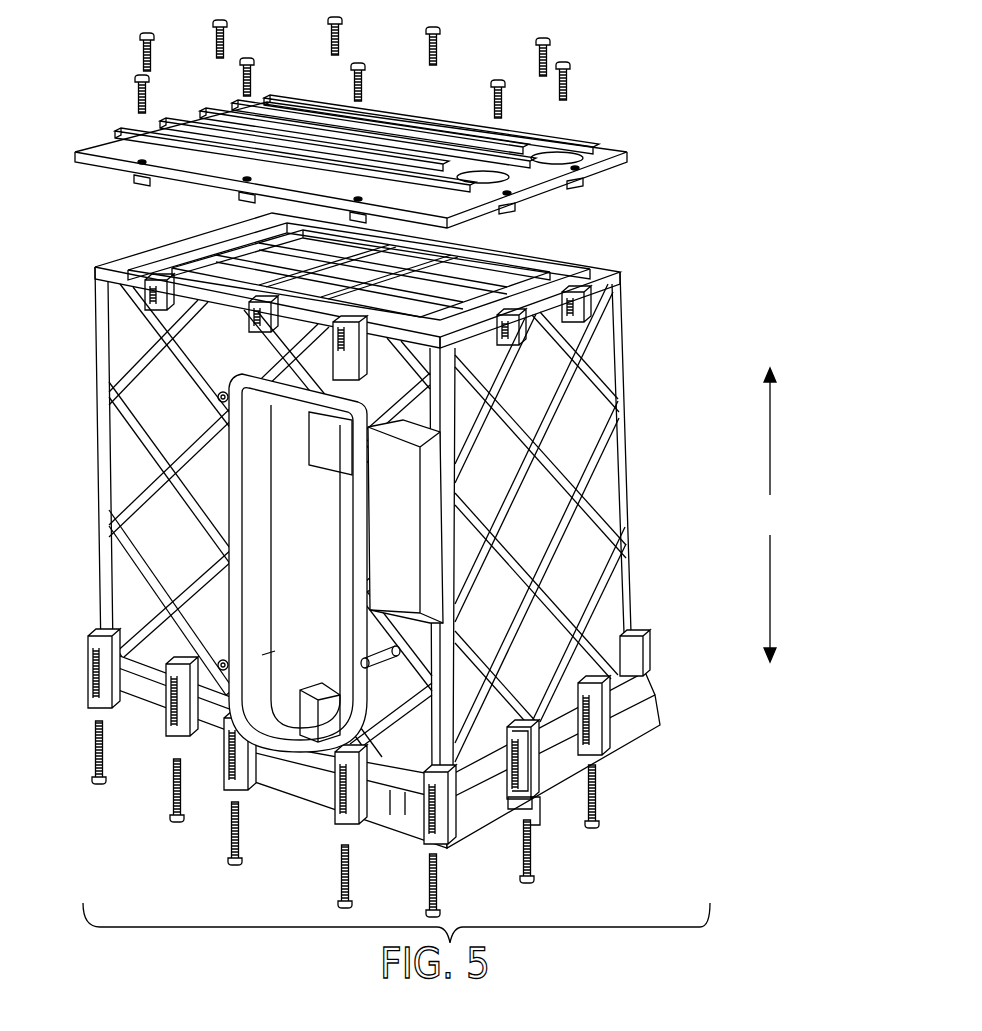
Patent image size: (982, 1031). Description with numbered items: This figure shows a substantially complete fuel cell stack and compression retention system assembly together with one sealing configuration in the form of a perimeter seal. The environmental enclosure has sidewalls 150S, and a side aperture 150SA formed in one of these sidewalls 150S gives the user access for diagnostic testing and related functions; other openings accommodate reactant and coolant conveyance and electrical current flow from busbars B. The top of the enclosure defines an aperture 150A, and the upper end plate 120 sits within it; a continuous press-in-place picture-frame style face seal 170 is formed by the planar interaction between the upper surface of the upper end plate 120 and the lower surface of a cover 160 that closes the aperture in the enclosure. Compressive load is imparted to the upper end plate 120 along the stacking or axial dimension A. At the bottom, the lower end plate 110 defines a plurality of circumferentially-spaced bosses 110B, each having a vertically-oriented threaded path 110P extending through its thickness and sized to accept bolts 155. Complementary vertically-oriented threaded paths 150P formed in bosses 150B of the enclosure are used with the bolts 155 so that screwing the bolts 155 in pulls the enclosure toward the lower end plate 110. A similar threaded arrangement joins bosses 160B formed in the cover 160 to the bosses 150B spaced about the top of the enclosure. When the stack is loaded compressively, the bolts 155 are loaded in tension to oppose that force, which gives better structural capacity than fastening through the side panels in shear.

The lower end plate 110 is at (647, 700).
The bosses 110B is at (517, 837).
The vertically-oriented threaded path 110P is at (540, 832).
The upper end plate 120 is at (297, 270).
The aperture 150A is at (493, 276).
The bosses 150B is at (577, 307).
The sidewalls 150S is at (600, 413).
The side aperture 150SA is at (290, 672).
The vertically-oriented threaded path 150P is at (537, 745).
The bolts 155 is at (345, 33).
The cover 160 is at (607, 152).
The bosses 160B is at (583, 178).
The face seal 170 is at (580, 272).
The axial dimension A is at (769, 515).
The busbars B is at (317, 713).